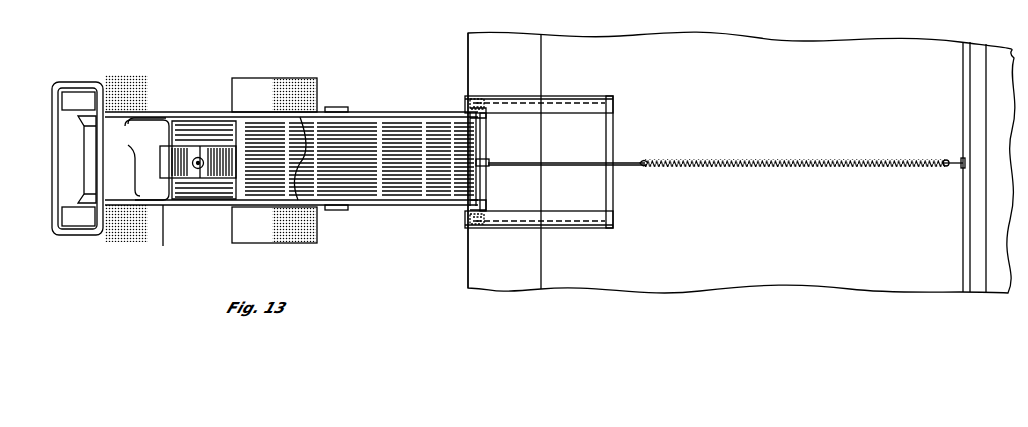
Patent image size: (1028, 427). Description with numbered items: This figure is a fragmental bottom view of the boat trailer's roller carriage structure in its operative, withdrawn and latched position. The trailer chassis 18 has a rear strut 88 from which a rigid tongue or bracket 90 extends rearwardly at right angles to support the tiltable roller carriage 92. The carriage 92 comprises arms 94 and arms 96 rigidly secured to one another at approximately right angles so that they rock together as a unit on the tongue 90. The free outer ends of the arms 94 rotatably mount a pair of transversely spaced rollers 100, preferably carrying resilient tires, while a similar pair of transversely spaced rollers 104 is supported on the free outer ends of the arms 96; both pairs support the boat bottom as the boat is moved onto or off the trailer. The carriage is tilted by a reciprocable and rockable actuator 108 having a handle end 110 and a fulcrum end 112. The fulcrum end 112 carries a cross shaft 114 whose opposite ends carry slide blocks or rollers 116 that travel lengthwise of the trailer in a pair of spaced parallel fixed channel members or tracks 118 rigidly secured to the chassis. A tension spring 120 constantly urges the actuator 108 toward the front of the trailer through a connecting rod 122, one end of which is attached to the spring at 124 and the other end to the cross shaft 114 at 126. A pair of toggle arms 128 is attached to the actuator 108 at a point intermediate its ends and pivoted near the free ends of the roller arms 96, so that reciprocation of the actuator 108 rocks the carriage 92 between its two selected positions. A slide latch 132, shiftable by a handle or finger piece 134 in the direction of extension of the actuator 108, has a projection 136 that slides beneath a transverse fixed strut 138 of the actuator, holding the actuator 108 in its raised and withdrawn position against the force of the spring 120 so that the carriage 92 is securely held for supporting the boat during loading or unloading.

The chassis 18 is at (511, 284).
The rear strut 88 is at (466, 252).
The tongue or bracket 90 is at (355, 186).
The roller carriage 92 is at (161, 236).
The arms 94 is at (166, 112).
The arms 96 is at (338, 107).
The rollers 100 is at (82, 82).
The rollers 104 is at (289, 86).
The actuator 108 is at (409, 208).
The handle end 110 is at (54, 178).
The fulcrum end 112 is at (470, 208).
The cross shaft 114 is at (486, 185).
The slide blocks or rollers 116 is at (485, 105).
The channel members or tracks 118 is at (580, 103).
The tension spring 120 is at (808, 167).
The connecting rod 122 is at (573, 165).
The spring attachment 124 is at (641, 166).
The cross shaft attachment 126 is at (488, 160).
The toggle arms 128 is at (316, 158).
The slide latch 132 is at (220, 170).
The handle or finger piece 134 is at (242, 150).
The projection 136 is at (164, 165).
The transverse fixed strut 138 is at (170, 128).